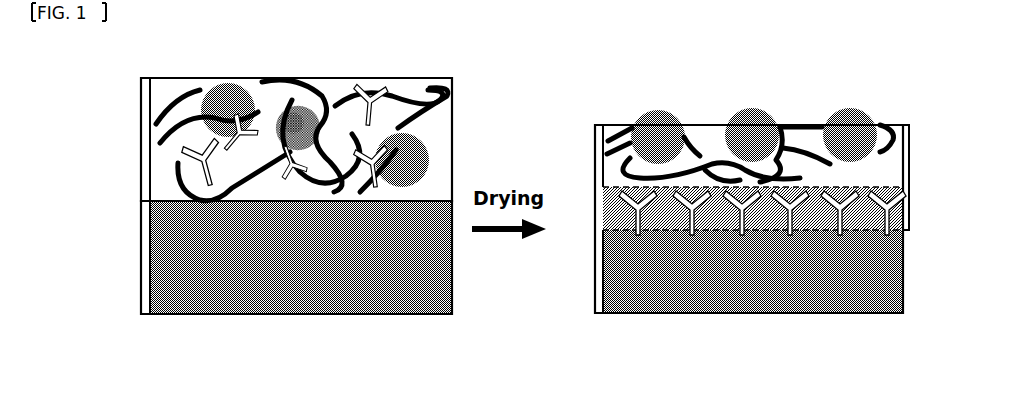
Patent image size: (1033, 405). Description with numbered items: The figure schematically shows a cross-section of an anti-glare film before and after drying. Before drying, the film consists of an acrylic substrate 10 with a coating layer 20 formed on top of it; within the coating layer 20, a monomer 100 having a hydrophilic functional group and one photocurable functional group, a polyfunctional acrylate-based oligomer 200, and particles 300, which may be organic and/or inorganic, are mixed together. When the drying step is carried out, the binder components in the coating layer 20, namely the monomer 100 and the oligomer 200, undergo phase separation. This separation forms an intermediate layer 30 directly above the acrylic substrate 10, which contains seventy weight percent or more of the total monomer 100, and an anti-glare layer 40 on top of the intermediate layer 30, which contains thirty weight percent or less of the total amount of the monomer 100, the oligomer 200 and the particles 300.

The acrylic substrate 10 is at (141, 257).
The coating layer 20 is at (141, 141).
The intermediate layer 30 is at (909, 210).
The anti-glare layer 40 is at (909, 158).
The monomer having a hydrophilic functional group and one photocurable functional gr 100 is at (903, 238).
The polyfunctional acrylate-based oligomer 200 is at (792, 126).
The particles 300 is at (667, 118).